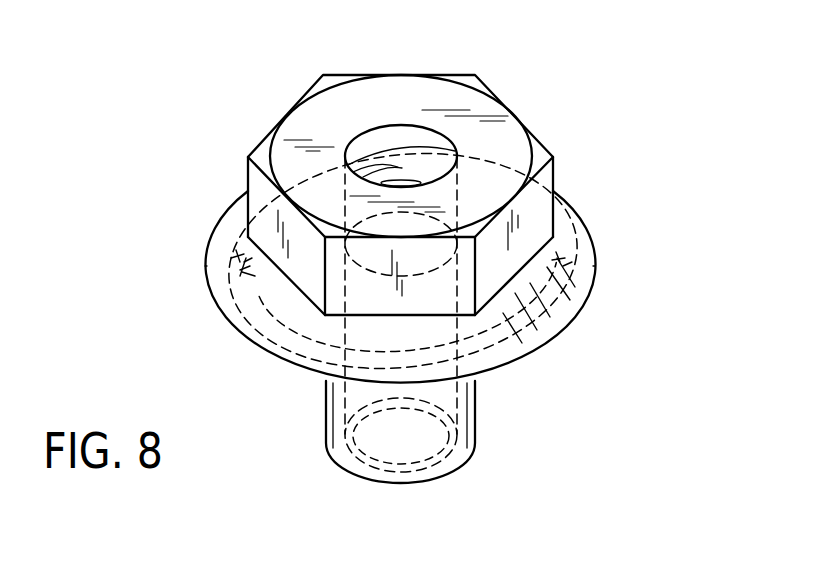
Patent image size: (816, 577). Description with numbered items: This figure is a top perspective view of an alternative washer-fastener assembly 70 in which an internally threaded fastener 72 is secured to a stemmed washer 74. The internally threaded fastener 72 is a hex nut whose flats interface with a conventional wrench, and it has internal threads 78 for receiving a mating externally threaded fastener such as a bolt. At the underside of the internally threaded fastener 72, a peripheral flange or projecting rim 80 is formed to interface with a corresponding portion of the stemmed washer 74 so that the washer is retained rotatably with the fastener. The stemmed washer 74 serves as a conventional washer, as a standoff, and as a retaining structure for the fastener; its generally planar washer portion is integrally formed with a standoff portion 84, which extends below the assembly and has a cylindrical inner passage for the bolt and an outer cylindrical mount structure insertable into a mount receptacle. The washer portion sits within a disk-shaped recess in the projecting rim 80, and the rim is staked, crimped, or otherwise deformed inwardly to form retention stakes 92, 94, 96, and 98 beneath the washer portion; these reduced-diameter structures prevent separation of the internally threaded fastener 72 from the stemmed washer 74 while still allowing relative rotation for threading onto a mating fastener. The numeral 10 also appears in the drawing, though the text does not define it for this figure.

The fastener assembly 10 is at (190, 206).
The washer-fastener assembly 70 is at (192, 113).
The internally threaded fastener 72 is at (566, 165).
The stemmed washer 74 is at (500, 451).
The internal threads 78 is at (423, 141).
The projecting rim 80 is at (575, 238).
The standoff portion 84 is at (324, 393).
The retention stake 92 is at (246, 266).
The retention stake 94 is at (455, 372).
The retention stake 96 is at (563, 267).
The retention stake 98 is at (392, 152).